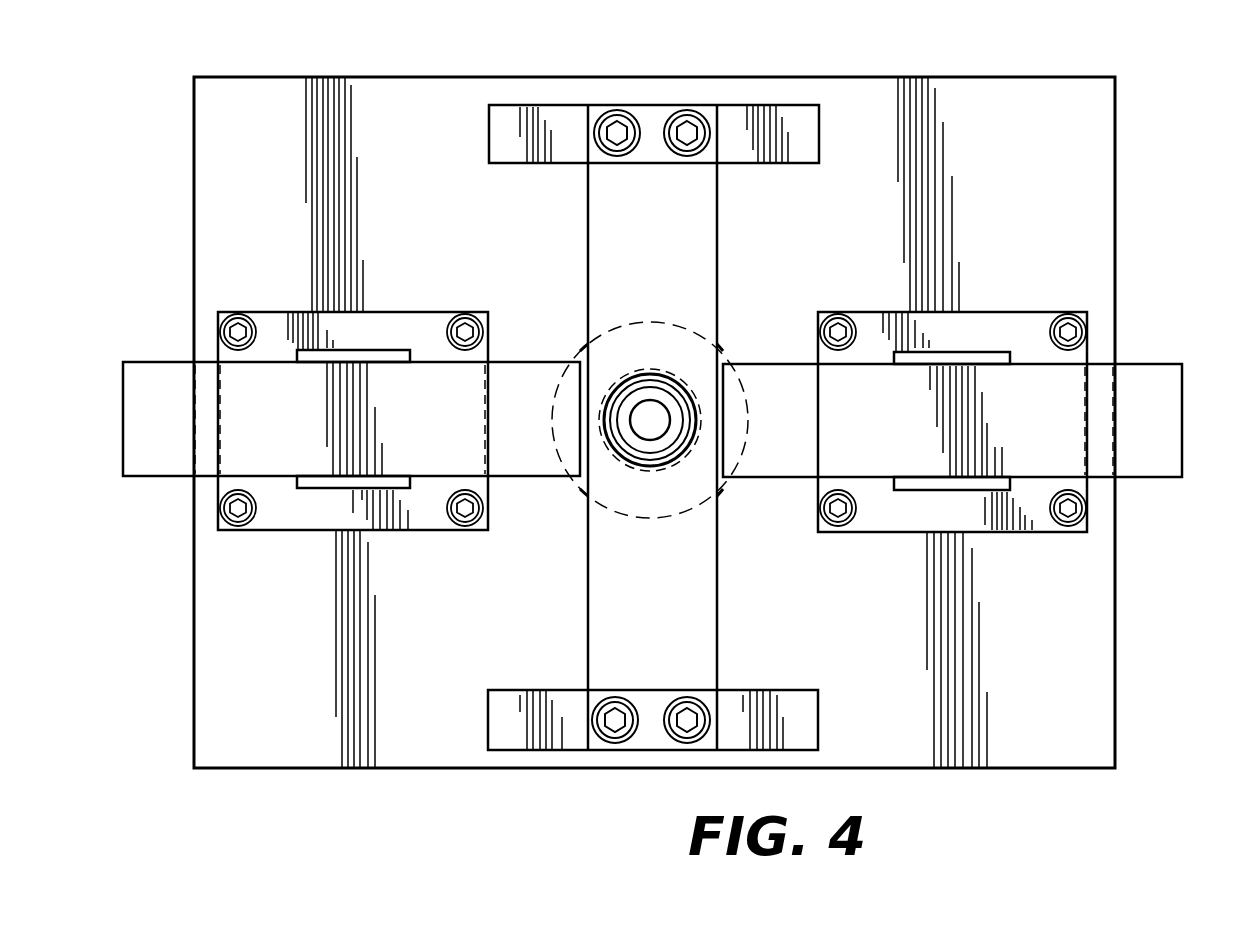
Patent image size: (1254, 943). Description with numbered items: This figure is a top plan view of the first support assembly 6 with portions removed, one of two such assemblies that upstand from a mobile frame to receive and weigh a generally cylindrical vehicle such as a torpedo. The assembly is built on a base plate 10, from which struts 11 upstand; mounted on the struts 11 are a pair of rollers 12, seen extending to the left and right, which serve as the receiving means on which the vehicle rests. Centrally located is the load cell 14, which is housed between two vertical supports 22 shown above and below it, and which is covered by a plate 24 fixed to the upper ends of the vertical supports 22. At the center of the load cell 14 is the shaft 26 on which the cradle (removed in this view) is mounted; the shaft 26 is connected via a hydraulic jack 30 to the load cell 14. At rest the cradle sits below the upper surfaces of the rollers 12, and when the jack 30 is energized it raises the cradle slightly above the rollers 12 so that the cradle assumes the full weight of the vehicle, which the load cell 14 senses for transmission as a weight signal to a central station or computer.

The first support assembly 6 is at (1182, 84).
The base plate 10 is at (252, 692).
The struts 11 is at (372, 358).
The rollers 12 is at (157, 362).
The load cell 14 is at (580, 356).
The vertical supports 22 is at (489, 131).
The plate 24 is at (588, 243).
The shaft 26 is at (642, 376).
The hydraulic jack 30 is at (625, 463).